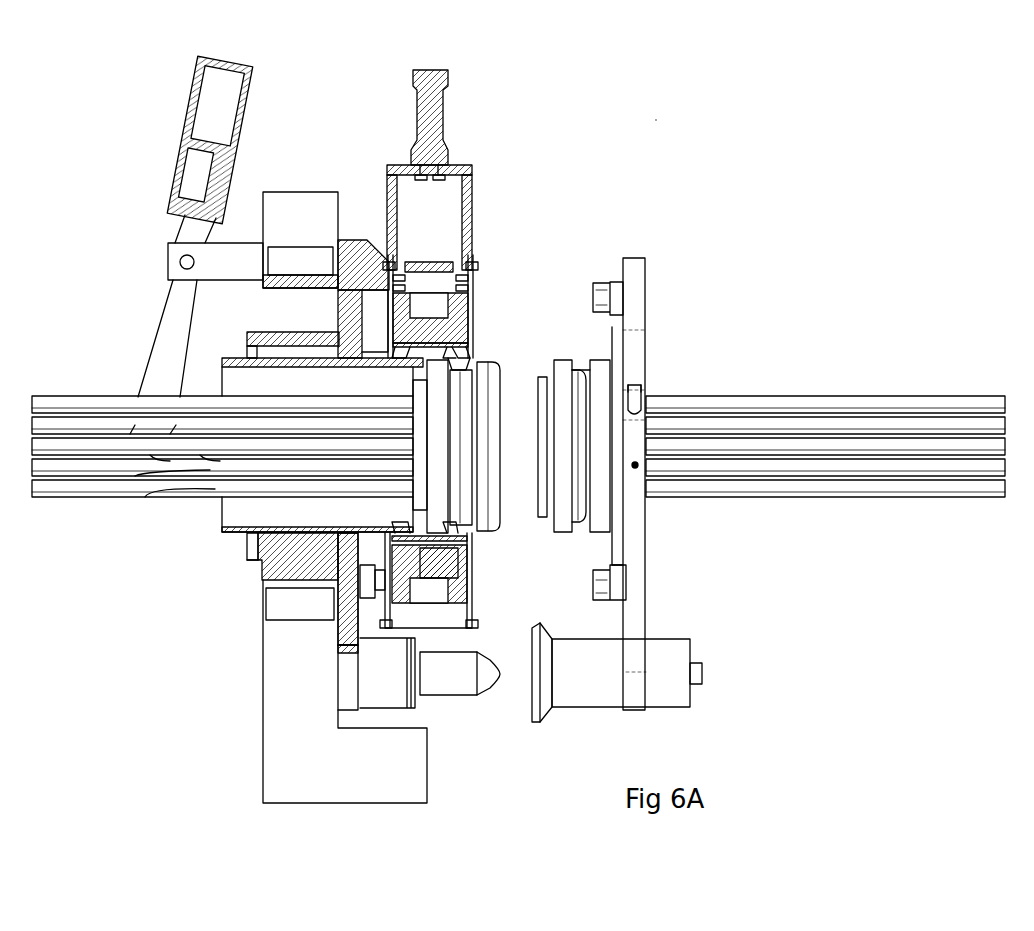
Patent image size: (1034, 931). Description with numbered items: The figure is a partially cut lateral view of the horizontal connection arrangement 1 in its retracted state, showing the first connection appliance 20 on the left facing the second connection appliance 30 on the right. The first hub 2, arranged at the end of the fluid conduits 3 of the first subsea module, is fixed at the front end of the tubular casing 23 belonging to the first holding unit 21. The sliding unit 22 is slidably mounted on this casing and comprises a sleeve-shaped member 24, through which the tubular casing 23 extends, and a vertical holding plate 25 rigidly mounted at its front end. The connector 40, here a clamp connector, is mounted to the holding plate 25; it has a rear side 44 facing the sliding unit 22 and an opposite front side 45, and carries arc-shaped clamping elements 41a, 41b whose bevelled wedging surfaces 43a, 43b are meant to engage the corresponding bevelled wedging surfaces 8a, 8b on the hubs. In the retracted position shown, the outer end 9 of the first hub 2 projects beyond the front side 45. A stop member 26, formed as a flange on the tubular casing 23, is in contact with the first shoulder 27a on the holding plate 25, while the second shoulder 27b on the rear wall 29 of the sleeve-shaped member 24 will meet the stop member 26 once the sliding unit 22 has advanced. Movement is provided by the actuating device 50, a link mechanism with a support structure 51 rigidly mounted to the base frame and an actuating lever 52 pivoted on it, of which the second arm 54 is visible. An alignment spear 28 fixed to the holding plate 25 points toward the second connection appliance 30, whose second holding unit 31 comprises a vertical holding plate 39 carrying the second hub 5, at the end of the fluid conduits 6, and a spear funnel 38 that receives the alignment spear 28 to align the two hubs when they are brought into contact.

The horizontal connection arrangement 1 is at (656, 120).
The first hub 2 is at (482, 525).
The fluid conduits 3 is at (106, 490).
The second hub 5 is at (563, 527).
The fluid conduits 6 is at (856, 498).
The bevelled wedging surface 8a is at (470, 364).
The bevelled wedging surface 8b is at (577, 372).
The outer end 9 is at (488, 392).
The first connection appliance 20 is at (363, 183).
The first holding unit 21 is at (236, 540).
The sliding unit 22 is at (253, 572).
The tubular casing 23 is at (236, 357).
The sleeve-shaped member 24 is at (275, 340).
The vertical holding plate 25 is at (352, 560).
The stop member 26 is at (333, 357).
The first shoulder 27a is at (335, 533).
The second shoulder 27b is at (252, 352).
The alignment spear 28 is at (450, 684).
The rear wall 29 is at (248, 355).
The second connection appliance 30 is at (658, 240).
The second holding unit 31 is at (658, 305).
The spear funnel 38 is at (566, 696).
The vertical holding plate 39 is at (640, 606).
The connector 40 is at (485, 181).
The clamping element 41a is at (430, 330).
The clamping element 41b is at (428, 572).
The bevelled wedging surface 43a is at (406, 360).
The bevelled wedging surface 43b is at (460, 350).
The rear side 44 is at (385, 615).
The front side 45 is at (470, 565).
The actuating device 50 is at (122, 243).
The support structure 51 is at (270, 716).
The actuating lever 52 is at (162, 224).
The second arm 54 is at (162, 337).